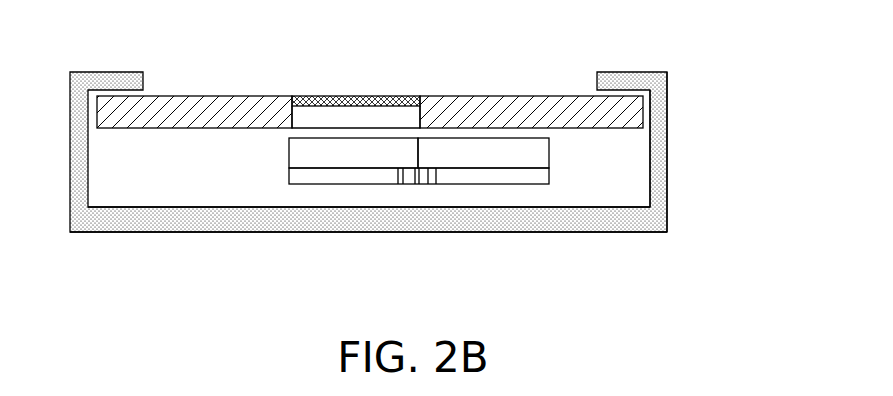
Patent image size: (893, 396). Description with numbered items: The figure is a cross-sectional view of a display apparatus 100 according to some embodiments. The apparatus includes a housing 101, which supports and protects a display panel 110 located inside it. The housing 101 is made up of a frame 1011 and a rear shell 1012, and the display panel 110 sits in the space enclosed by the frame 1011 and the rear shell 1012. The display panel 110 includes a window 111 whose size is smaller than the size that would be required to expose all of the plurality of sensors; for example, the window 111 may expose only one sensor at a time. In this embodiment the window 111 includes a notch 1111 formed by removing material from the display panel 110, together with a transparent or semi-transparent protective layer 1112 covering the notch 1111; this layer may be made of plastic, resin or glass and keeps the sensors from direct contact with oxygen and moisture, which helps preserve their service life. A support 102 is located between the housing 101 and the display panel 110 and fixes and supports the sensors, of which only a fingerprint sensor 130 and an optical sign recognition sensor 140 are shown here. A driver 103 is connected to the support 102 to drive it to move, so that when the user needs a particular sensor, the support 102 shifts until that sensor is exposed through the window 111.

The display apparatus 100 is at (122, 41).
The housing 101 is at (725, 186).
The frame 1011 is at (658, 168).
The rear shell 1012 is at (607, 207).
The display panel 110 is at (477, 96).
The window 111 is at (384, 70).
The notch 1111 is at (383, 113).
The transparent or semi-transparent protective layer 1112 is at (338, 97).
The fingerprint sensor 130 is at (330, 138).
The optical sign recognition sensor 140 is at (510, 138).
The support 102 is at (515, 184).
The driver 103 is at (415, 184).